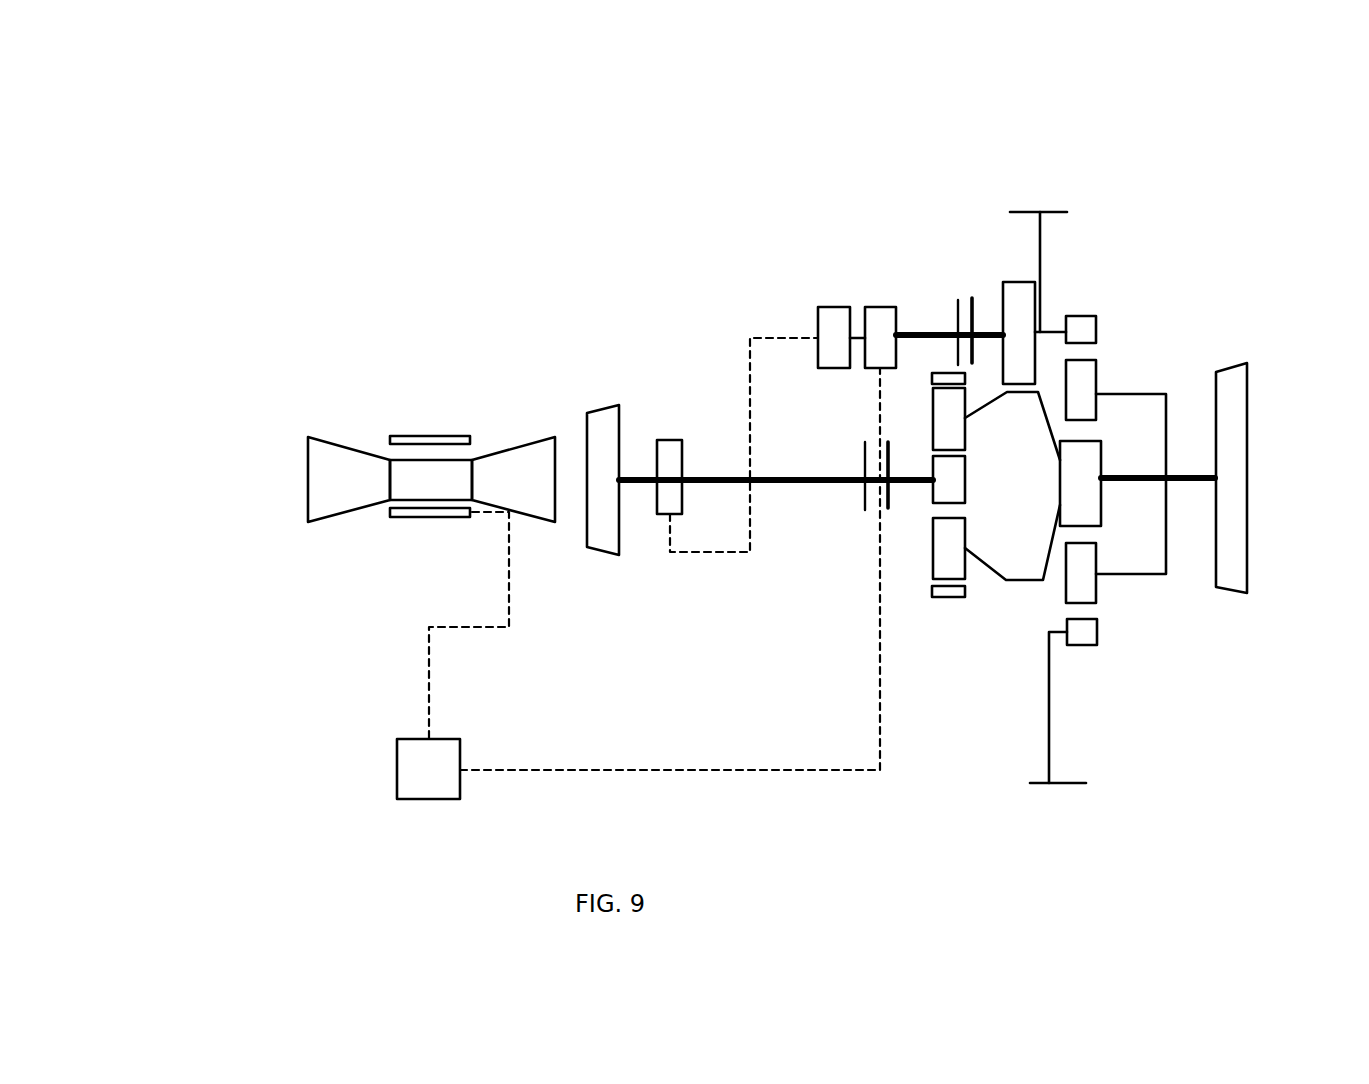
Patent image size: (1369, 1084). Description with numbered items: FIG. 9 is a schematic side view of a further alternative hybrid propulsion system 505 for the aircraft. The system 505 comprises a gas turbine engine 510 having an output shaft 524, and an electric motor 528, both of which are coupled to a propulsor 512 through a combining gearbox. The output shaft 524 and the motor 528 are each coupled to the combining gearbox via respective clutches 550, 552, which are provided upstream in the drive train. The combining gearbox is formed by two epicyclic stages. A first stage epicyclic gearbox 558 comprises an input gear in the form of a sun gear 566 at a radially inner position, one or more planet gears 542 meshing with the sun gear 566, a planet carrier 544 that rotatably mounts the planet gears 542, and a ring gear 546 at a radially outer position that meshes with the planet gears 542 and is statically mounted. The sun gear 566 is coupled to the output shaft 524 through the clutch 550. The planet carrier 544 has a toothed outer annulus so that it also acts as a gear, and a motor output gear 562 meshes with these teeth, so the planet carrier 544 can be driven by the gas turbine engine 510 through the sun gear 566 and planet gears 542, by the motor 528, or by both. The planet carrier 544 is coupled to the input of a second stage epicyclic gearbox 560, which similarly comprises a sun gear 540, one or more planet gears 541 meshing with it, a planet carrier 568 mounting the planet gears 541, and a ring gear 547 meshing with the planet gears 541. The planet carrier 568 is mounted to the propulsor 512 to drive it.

The hybrid propulsion system 505 is at (285, 403).
The gas turbine engine 510 is at (369, 575).
The propulsor 512 is at (1230, 363).
The output shaft 524 is at (642, 470).
The electric motor 528 is at (883, 304).
The sun gear 540 is at (1102, 483).
The planet gears 541 is at (1100, 393).
The planet gears 542 is at (965, 418).
The planet carrier 544 is at (1022, 580).
The ring gear 546 is at (932, 591).
The ring gear 547 is at (1080, 645).
The clutch 550 is at (866, 510).
The clutch 552 is at (962, 298).
The first stage epicyclic gearbox 558 is at (952, 657).
The second stage epicyclic gearbox 560 is at (1140, 316).
The motor output gear 562 is at (1010, 282).
The sun gear 566 is at (965, 478).
The planet carrier 568 is at (1163, 393).